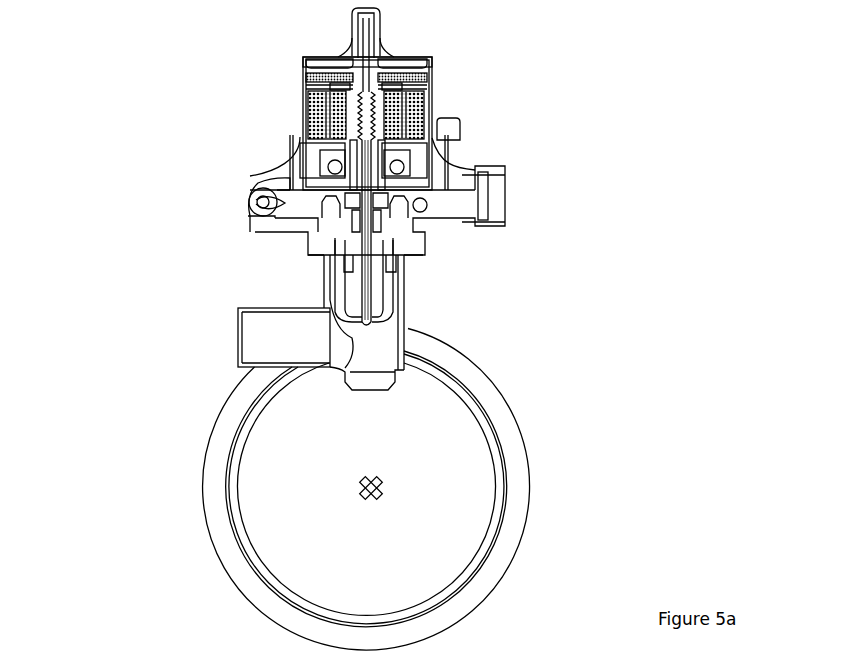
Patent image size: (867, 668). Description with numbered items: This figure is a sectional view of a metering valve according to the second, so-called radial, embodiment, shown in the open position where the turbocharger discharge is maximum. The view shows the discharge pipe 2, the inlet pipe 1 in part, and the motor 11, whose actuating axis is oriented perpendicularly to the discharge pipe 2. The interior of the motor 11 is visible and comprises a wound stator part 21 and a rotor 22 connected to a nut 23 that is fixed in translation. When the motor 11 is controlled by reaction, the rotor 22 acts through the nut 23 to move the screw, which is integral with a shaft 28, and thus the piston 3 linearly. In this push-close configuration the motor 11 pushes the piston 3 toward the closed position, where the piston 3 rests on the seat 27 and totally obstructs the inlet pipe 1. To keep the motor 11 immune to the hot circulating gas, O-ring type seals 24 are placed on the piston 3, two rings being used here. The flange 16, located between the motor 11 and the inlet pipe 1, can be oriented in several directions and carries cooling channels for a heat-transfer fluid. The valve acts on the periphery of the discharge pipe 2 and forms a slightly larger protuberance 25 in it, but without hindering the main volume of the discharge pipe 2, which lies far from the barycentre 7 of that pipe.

The inlet pipe 1 is at (245, 325).
The discharge pipe 2 is at (257, 478).
The piston 3 is at (385, 293).
The barycentre 7 is at (376, 485).
The motor 11 is at (303, 118).
The flange 16 is at (300, 204).
The wound stator part 21 is at (303, 123).
The rotor 22 is at (375, 108).
The nut 23 is at (410, 88).
The O-ring type seals 24 is at (338, 253).
The protuberance 25 is at (395, 385).
The seat 27 is at (268, 387).
The shaft 28 is at (363, 220).